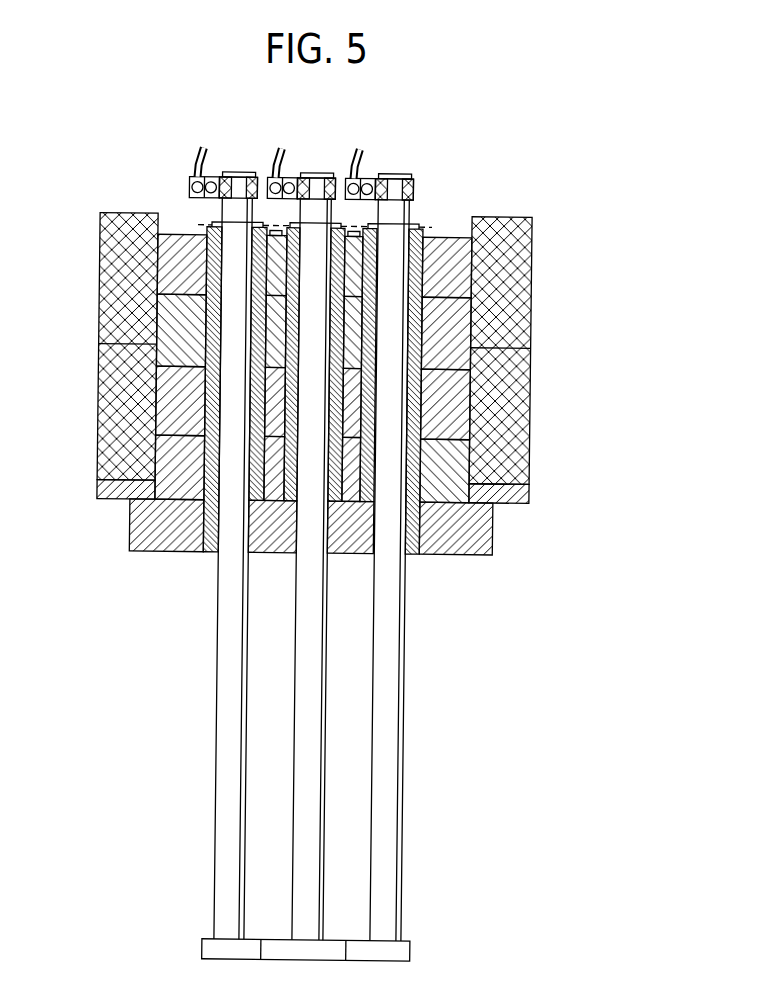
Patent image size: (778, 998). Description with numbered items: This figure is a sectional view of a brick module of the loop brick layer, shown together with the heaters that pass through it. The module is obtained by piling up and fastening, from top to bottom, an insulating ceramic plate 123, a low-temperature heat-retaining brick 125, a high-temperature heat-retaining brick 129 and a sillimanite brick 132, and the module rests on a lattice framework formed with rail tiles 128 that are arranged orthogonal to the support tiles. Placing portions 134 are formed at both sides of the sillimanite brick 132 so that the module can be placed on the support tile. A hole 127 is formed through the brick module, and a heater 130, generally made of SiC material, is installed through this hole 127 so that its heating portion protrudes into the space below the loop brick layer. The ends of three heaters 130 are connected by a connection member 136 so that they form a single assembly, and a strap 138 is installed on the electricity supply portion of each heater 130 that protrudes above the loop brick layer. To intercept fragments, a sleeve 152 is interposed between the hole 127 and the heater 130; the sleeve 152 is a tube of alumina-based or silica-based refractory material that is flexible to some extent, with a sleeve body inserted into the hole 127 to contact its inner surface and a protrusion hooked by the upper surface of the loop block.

The insulating ceramic plate 123 is at (181, 243).
The low-temperature heat-retaining brick 125 is at (172, 326).
The hole 127 is at (422, 263).
The rail tile 128 is at (113, 283).
The high-temperature heat-retaining brick 129 is at (455, 465).
The heater 130 is at (414, 742).
The sillimanite brick 132 is at (173, 550).
The placing portion 134 is at (113, 523).
The connection member 136 is at (418, 950).
The strap 138 is at (413, 169).
The sleeve 152 is at (415, 553).